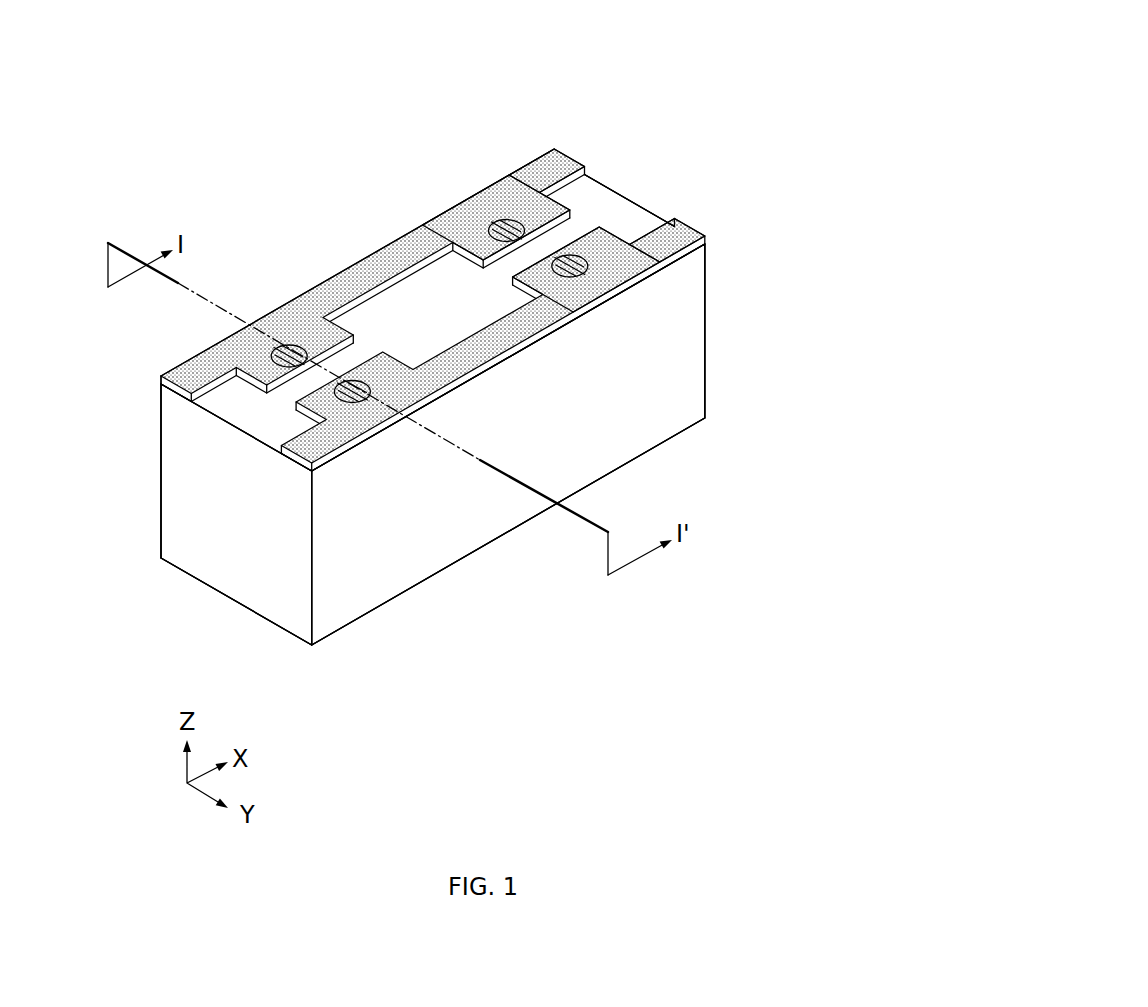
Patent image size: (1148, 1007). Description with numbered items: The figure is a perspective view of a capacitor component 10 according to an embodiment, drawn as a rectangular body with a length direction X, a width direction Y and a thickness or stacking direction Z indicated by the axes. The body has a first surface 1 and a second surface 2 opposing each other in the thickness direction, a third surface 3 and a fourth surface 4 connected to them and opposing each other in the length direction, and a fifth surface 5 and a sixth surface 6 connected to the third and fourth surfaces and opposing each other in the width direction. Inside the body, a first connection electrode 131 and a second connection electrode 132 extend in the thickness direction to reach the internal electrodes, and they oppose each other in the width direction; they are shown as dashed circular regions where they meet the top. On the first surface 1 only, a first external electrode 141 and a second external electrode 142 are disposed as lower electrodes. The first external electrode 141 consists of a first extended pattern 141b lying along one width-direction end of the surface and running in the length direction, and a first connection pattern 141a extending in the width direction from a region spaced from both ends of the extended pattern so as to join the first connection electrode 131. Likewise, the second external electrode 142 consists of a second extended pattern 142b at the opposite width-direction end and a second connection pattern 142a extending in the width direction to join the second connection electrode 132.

The capacitor component 10 is at (308, 37).
The first surface 1 is at (598, 200).
The second surface 2 is at (410, 604).
The third surface 3 is at (218, 546).
The fourth surface 4 is at (647, 202).
The fifth surface 5 is at (455, 526).
The sixth surface 6 is at (266, 298).
The first connection electrode 131 is at (290, 348).
The second connection electrode 132 is at (362, 390).
The first external electrode 141 is at (572, 97).
The first connection pattern 141a is at (480, 198).
The first extended pattern 141b is at (553, 172).
The second external electrode 142 is at (832, 237).
The second connection pattern 142a is at (590, 262).
The second extended pattern 142b is at (706, 232).